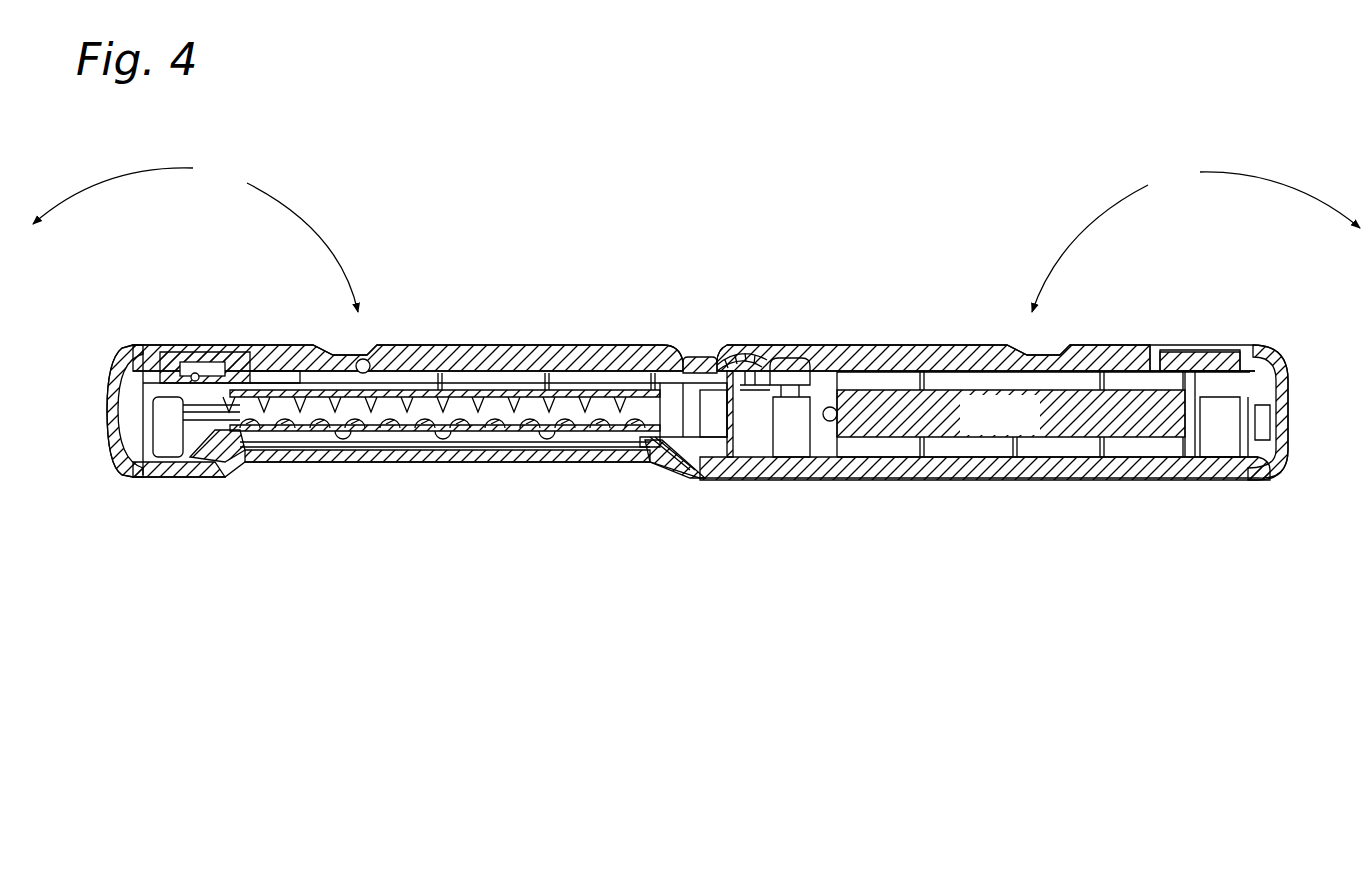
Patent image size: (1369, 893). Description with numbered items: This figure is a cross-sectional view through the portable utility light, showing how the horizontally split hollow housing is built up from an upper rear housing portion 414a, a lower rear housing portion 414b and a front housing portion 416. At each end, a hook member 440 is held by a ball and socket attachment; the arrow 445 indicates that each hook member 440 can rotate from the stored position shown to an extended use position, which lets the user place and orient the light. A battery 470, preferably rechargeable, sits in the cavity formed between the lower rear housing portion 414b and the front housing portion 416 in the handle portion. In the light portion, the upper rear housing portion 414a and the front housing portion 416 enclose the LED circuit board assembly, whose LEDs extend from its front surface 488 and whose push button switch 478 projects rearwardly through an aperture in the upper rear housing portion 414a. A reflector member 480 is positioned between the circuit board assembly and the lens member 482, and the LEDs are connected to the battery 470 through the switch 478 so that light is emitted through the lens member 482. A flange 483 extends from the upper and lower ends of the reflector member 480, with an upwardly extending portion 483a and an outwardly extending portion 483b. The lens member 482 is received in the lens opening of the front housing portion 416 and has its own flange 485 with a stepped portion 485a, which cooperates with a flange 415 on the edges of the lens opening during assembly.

The upper rear housing portion 414a is at (480, 341).
The lower rear housing portion 414b is at (931, 342).
The flange 415 is at (208, 475).
The front housing portion 416 is at (906, 482).
The hook member 440 is at (188, 343).
The arrow 445 is at (696, 238).
The battery 470 is at (1017, 428).
The switch 478 is at (688, 357).
The reflector member 480 is at (431, 370).
The lens member 482 is at (438, 465).
The flange 483 is at (620, 462).
The upwardly extending portion 483a is at (663, 440).
The outwardly extending portion 483b is at (172, 470).
The flange 485 is at (232, 480).
The stepped portion 485a is at (232, 463).
The front surface 488 is at (581, 398).